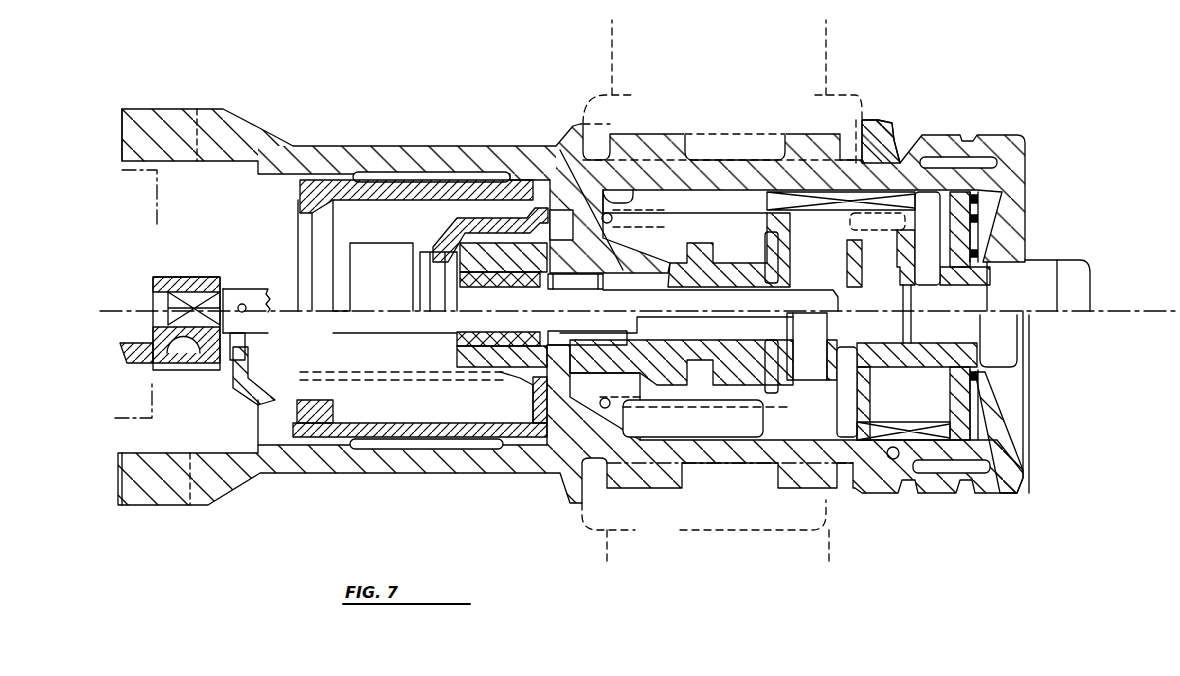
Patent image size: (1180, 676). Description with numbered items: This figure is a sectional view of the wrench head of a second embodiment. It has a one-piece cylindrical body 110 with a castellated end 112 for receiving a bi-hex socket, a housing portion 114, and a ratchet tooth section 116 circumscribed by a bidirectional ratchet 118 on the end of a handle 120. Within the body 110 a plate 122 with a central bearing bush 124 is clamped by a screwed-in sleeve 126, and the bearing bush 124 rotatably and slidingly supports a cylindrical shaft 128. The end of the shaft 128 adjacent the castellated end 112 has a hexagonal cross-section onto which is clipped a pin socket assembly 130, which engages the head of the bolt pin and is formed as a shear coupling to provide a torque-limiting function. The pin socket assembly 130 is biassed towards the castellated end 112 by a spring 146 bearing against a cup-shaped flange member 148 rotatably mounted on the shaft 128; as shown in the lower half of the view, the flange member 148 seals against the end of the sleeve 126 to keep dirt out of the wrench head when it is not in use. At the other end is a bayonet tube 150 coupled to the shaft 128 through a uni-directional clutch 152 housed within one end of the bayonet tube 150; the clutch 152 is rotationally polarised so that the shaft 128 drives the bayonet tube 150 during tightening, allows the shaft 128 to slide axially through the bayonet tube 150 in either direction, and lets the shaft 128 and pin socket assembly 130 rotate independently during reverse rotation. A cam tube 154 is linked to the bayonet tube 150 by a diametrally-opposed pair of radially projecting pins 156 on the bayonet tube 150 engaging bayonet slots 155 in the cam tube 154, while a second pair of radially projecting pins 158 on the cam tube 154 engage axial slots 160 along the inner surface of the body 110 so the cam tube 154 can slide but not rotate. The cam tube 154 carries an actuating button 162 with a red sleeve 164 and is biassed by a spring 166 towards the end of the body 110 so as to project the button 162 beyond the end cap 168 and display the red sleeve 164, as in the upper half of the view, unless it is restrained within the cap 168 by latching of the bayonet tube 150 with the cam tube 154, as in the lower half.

The cylindrical body 110 is at (433, 478).
The castellated end 112 is at (163, 497).
The housing portion 114 is at (433, 152).
The ratchet tooth section 116 is at (777, 490).
The bidirectional ratchet 118 is at (812, 122).
The handle 120 is at (800, 78).
The plate 122 is at (533, 408).
The central bearing bush 124 is at (457, 340).
The screwed-in sleeve 126 is at (300, 190).
The cylindrical shaft 128 is at (382, 322).
The pin socket assembly 130 is at (203, 378).
The spring 146 is at (413, 380).
The cup-shaped flange member 148 is at (275, 402).
The bayonet tube 150 is at (643, 263).
The uni-directional clutch 152 is at (603, 288).
The cam tube 154 is at (830, 363).
The bayonet slots 155 is at (878, 240).
The radially projecting pins 156 is at (778, 242).
The radially projecting pins 158 is at (926, 273).
The axial slots 160 is at (790, 200).
The actuating button 162 is at (1080, 292).
The red sleeve 164 is at (1027, 273).
The spring 166 is at (688, 403).
The end cap 168 is at (1013, 477).